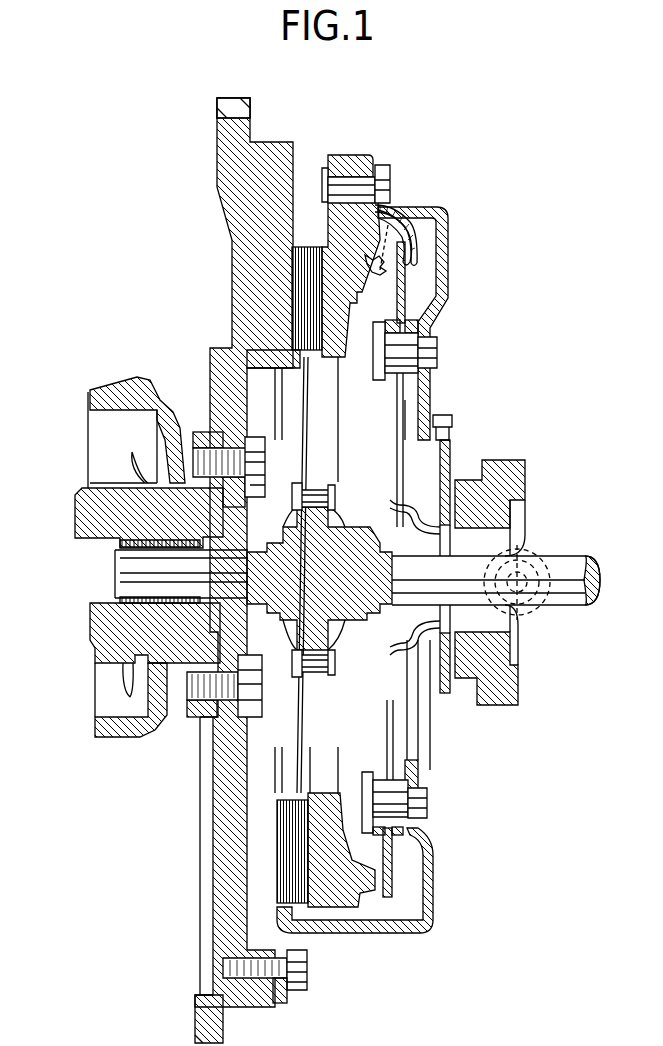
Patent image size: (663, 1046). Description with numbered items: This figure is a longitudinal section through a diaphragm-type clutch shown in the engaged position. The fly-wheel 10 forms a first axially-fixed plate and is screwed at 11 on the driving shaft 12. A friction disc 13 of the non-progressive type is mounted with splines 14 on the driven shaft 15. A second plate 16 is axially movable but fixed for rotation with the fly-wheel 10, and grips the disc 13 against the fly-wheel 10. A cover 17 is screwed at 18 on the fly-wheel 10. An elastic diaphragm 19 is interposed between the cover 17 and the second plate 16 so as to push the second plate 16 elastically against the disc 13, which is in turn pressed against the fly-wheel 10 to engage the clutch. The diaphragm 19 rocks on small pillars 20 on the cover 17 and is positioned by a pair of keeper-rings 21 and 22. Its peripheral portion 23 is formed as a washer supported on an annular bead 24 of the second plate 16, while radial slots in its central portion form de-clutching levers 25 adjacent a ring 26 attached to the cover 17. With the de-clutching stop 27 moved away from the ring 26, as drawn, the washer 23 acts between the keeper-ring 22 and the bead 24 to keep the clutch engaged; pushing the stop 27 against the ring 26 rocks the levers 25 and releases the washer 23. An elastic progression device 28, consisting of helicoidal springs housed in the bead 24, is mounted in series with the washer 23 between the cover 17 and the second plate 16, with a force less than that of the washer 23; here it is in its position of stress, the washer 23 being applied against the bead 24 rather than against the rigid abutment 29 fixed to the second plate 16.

The fly-wheel 10 is at (242, 240).
The screws 11 is at (263, 457).
The driving shaft 12 is at (75, 510).
The friction disc 13 is at (300, 300).
The splines 14 is at (353, 548).
The driven shaft 15 is at (577, 565).
The second plate 16 is at (343, 200).
The cover 17 is at (448, 247).
The screws 18 is at (303, 973).
The elastic diaphragm 19 is at (403, 282).
The small pillars 20 is at (403, 358).
The keeper-ring 21 is at (392, 323).
The keeper-ring 22 is at (417, 327).
The peripheral portion 23 is at (392, 875).
The annular bead 24 is at (370, 897).
The de-clutching levers 25 is at (397, 722).
The ring 26 is at (450, 462).
The de-clutching stop 27 is at (527, 481).
The elastic progression device 28 is at (404, 212).
The rigid abutment 29 is at (423, 230).